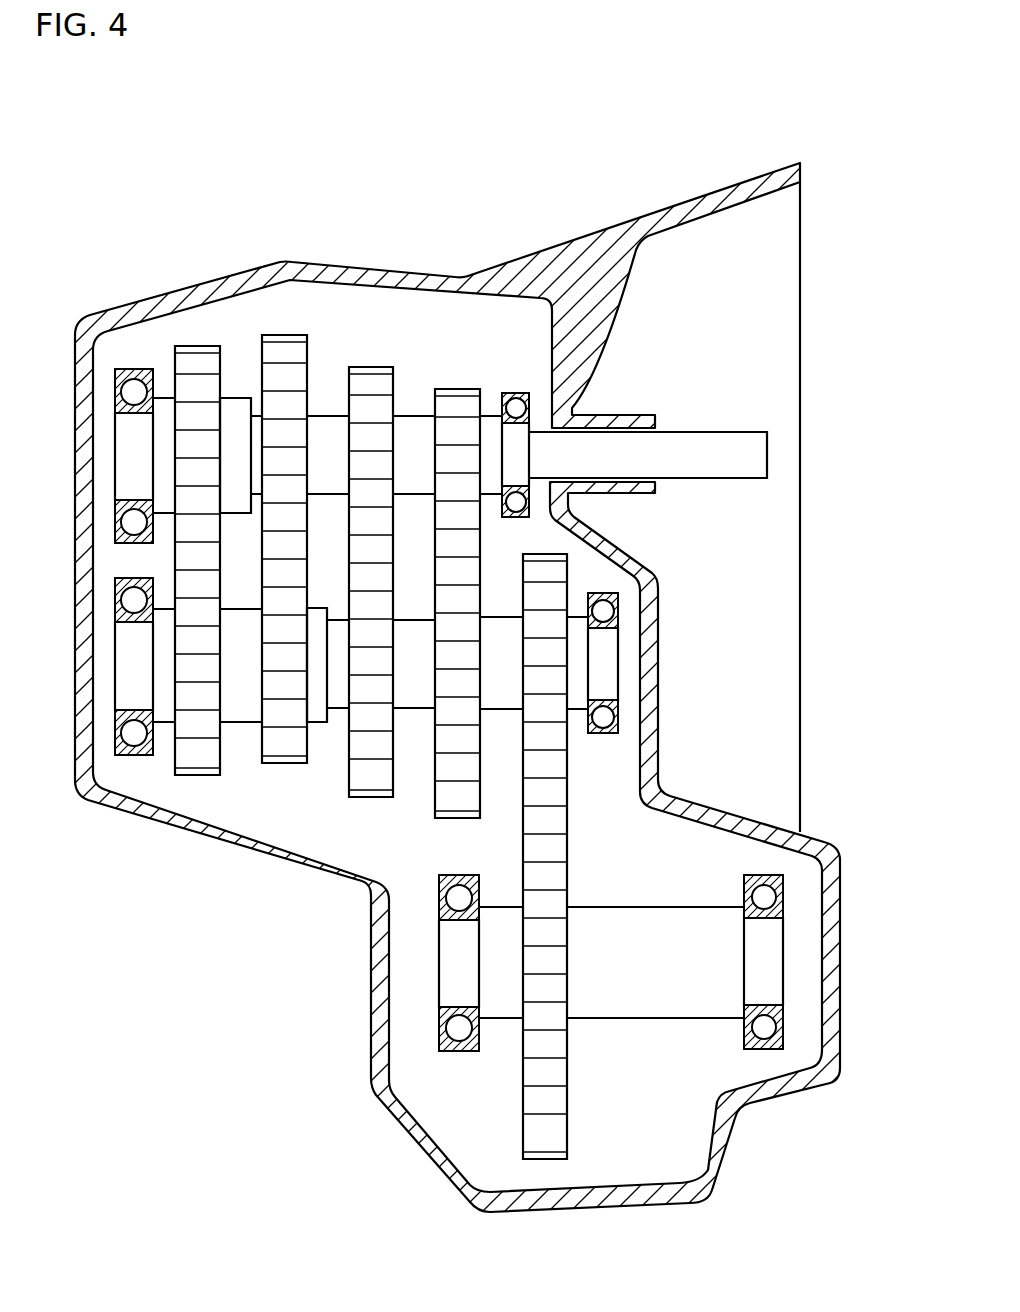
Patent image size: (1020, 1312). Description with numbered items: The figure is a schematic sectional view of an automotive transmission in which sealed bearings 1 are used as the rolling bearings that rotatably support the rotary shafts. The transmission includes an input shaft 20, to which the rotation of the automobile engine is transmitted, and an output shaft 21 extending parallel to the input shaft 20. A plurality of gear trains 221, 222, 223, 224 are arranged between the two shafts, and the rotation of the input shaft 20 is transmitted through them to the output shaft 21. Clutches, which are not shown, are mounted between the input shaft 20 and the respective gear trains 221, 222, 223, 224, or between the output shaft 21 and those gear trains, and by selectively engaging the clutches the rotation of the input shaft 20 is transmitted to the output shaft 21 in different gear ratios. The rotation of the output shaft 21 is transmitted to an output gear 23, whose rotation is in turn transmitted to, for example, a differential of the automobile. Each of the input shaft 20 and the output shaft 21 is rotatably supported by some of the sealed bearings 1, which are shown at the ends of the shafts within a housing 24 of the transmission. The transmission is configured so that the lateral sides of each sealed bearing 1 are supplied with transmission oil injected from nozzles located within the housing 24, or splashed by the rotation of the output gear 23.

The sealed bearing 1 is at (139, 358).
The input shaft 20 is at (125, 459).
The output shaft 21 is at (128, 671).
The gear train 221 is at (457, 388).
The gear train 222 is at (366, 366).
The gear train 223 is at (285, 334).
The gear train 224 is at (200, 345).
The output gear 23 is at (553, 748).
The housing 24 is at (268, 853).